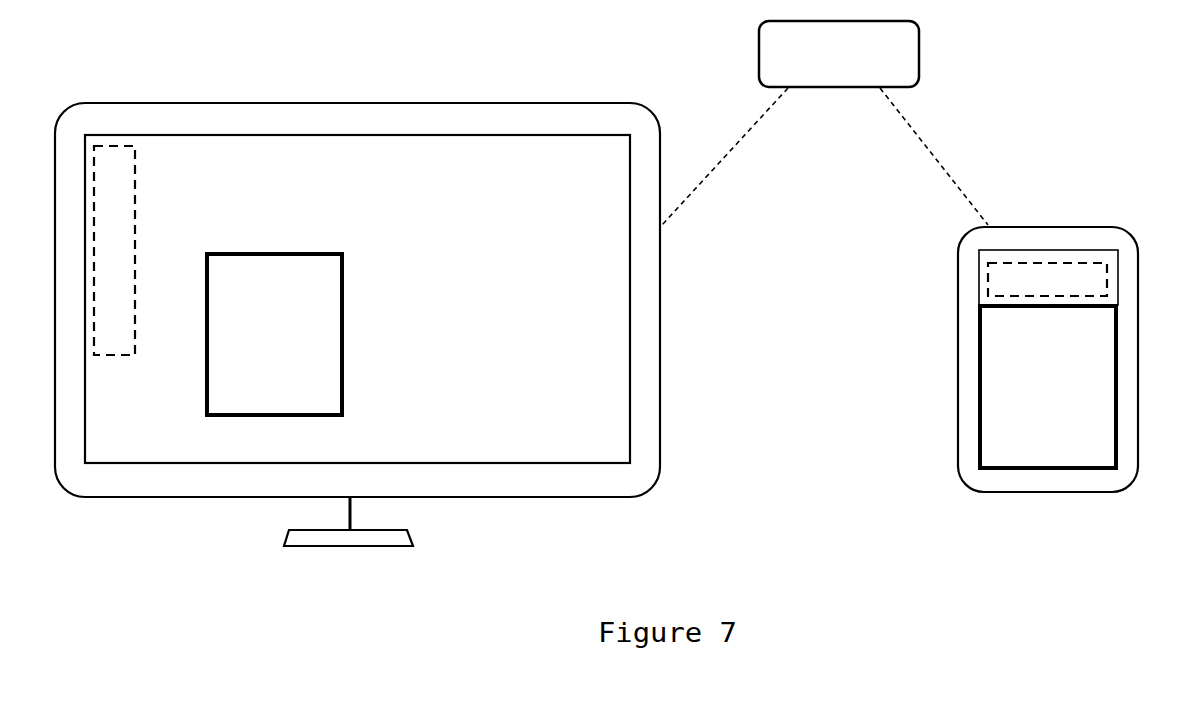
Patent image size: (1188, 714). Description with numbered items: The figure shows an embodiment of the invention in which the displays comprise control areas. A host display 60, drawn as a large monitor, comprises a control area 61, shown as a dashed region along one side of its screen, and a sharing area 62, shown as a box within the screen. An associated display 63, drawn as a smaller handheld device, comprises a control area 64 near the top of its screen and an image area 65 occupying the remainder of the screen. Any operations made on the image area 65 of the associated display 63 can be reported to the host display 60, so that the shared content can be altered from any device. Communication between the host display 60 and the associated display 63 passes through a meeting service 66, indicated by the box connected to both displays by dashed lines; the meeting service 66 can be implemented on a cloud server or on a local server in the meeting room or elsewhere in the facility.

The host display 60 is at (158, 105).
The control area 61 is at (95, 356).
The sharing area 62 is at (242, 252).
The associated display 63 is at (1018, 226).
The control area 64 is at (1107, 274).
The image area 65 is at (1085, 412).
The meeting service 66 is at (920, 42).